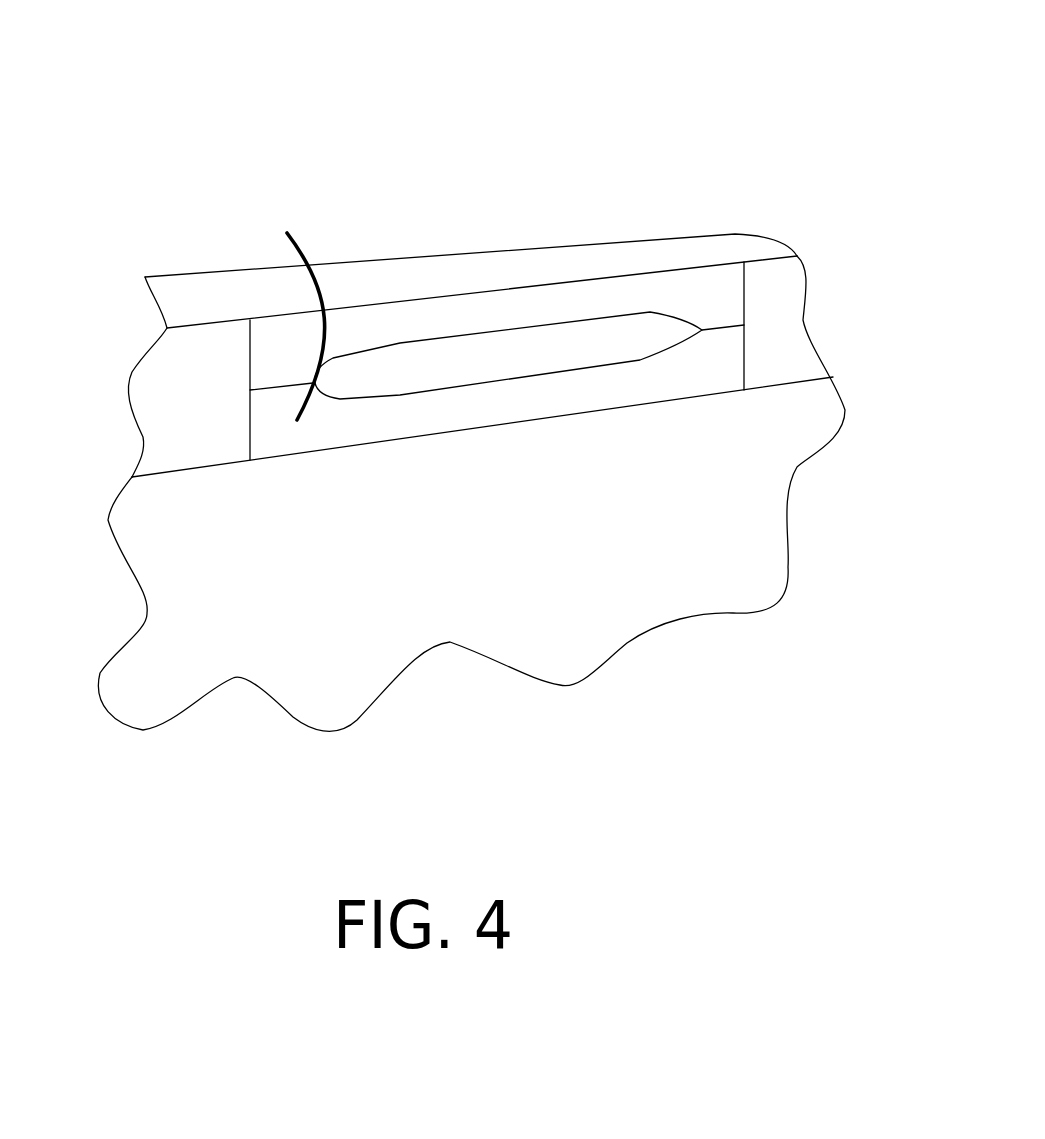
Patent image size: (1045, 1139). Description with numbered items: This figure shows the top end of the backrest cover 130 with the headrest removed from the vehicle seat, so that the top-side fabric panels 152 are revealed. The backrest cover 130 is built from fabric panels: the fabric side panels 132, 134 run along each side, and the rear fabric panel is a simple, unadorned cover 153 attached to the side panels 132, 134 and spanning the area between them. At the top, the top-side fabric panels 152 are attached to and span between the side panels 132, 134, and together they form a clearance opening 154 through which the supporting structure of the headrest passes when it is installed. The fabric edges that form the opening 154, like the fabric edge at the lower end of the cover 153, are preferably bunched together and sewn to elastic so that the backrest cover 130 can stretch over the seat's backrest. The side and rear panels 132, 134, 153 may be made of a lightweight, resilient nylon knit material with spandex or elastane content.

The backrest cover 130 is at (160, 215).
The fabric side panel 132 is at (180, 388).
The fabric side panel 134 is at (777, 341).
The top-side fabric panel 152 is at (283, 345).
The cover 153 is at (498, 597).
The clearance opening 154 is at (467, 365).